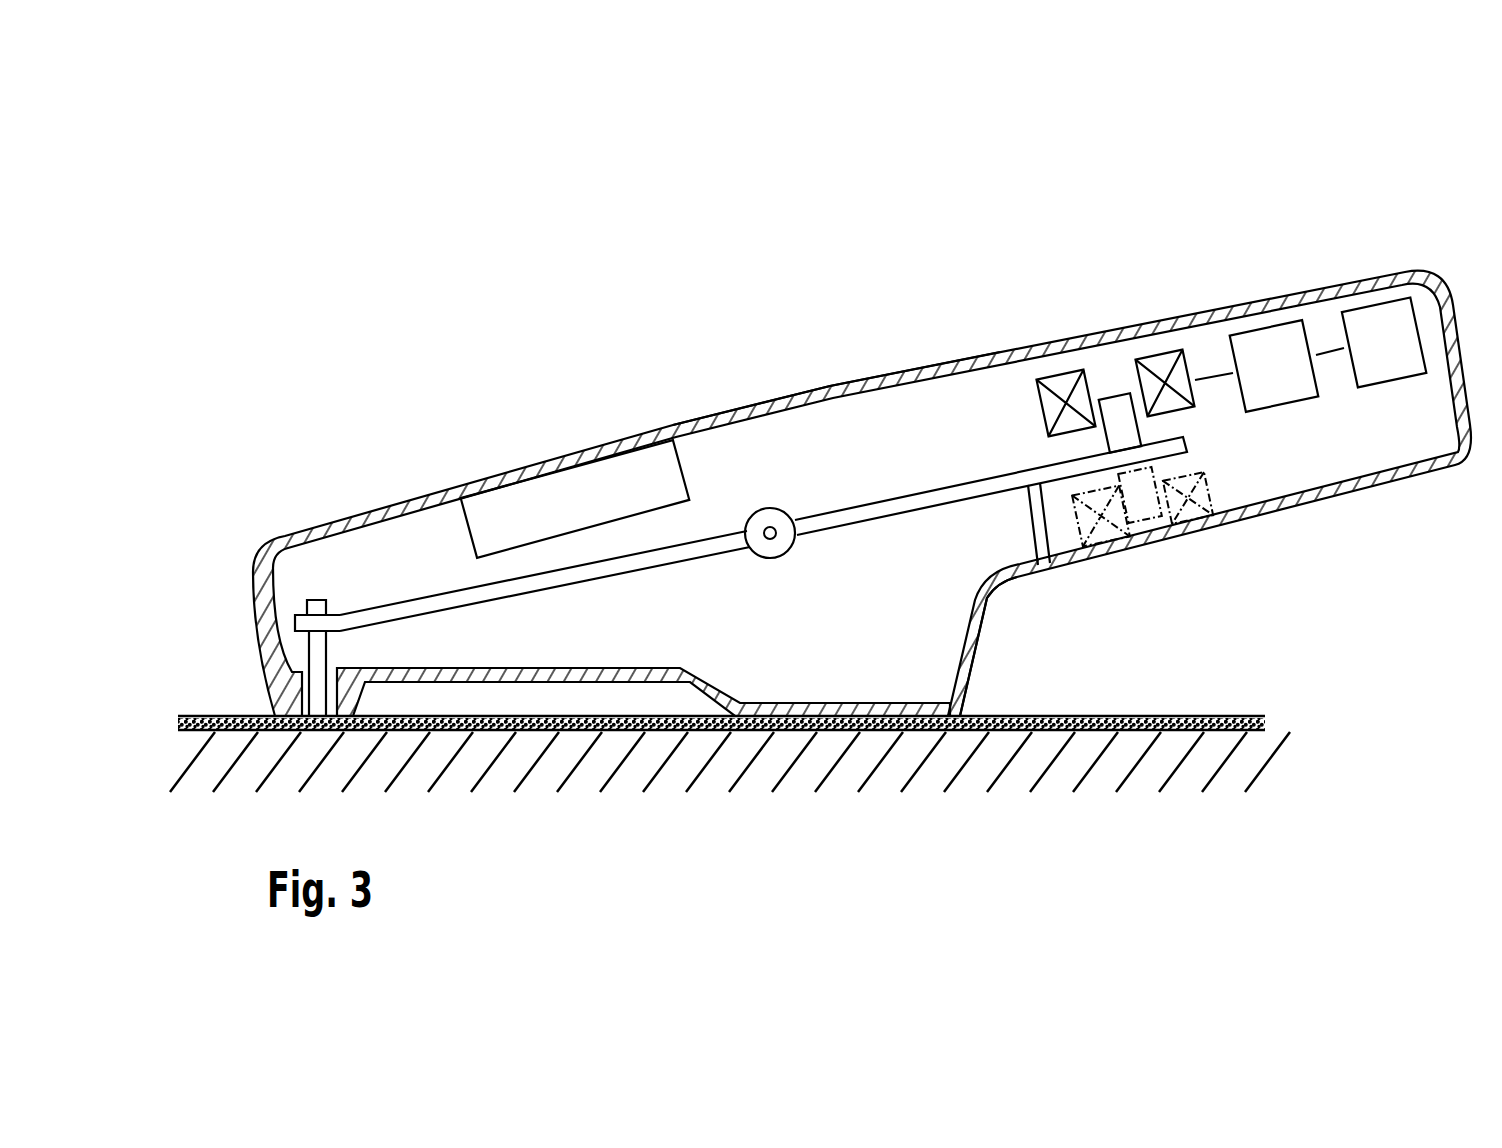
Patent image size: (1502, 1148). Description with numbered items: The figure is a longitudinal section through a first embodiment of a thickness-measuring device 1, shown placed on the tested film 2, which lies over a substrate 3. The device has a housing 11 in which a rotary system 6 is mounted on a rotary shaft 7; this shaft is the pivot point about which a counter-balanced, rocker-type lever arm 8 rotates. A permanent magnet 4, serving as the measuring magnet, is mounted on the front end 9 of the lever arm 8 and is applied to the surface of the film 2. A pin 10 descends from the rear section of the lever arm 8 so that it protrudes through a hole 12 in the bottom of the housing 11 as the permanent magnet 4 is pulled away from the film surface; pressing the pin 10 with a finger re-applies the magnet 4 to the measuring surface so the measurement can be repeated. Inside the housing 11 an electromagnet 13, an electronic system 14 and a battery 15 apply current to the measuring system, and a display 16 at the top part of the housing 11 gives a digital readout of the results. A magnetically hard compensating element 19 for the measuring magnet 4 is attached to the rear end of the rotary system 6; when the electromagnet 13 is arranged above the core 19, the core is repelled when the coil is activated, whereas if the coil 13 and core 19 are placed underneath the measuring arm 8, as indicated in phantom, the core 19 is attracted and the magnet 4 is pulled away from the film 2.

The thickness-measuring device 1 is at (1385, 262).
The tested film 2 is at (205, 716).
The substrate 3 is at (208, 750).
The permanent magnet 4 is at (318, 657).
The rotary system 6 is at (921, 484).
The rotary shaft 7 is at (774, 530).
The lever arm 8 is at (700, 555).
The front end 9 is at (328, 619).
The pin 10 is at (1046, 573).
The housing 11 is at (827, 390).
The hole 12 is at (1027, 582).
The electromagnet 13 is at (1058, 376).
The electronic system 14 is at (1250, 335).
The battery 15 is at (1353, 317).
The display 16 is at (646, 458).
The compensating element 19 is at (1118, 396).